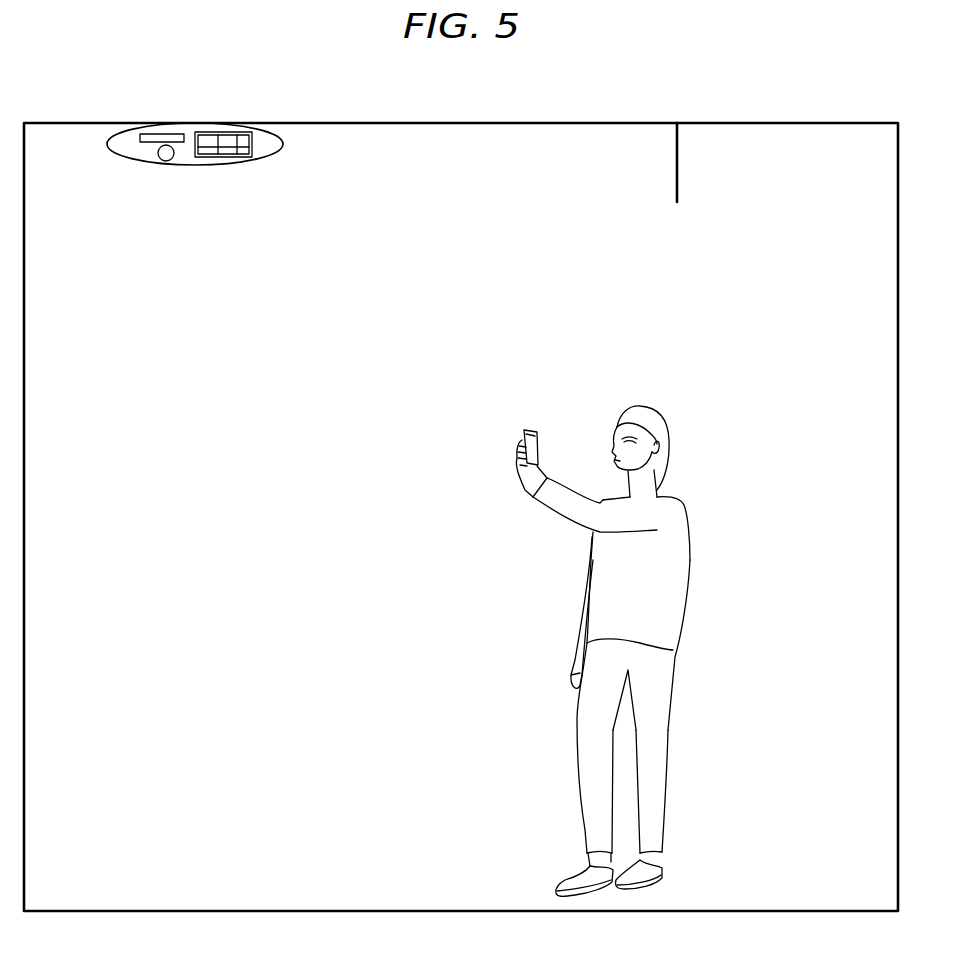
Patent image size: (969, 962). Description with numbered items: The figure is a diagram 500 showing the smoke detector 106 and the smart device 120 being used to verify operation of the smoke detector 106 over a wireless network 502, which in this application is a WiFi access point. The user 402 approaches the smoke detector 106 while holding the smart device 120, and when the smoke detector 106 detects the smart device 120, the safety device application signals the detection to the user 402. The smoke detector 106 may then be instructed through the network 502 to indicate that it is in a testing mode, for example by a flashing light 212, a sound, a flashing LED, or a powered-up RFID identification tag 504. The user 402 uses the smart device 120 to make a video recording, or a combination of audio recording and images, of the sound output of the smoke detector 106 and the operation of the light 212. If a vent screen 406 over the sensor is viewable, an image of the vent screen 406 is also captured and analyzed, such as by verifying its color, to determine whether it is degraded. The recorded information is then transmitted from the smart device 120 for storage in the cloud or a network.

The diagram 500 is at (719, 99).
The wireless network 502 is at (677, 165).
The smoke detector 106 is at (280, 142).
The RFID identification tag 504 is at (147, 143).
The light 212 is at (161, 161).
The vent screen 406 is at (228, 146).
The smart device 120 is at (522, 432).
The user 402 is at (685, 600).